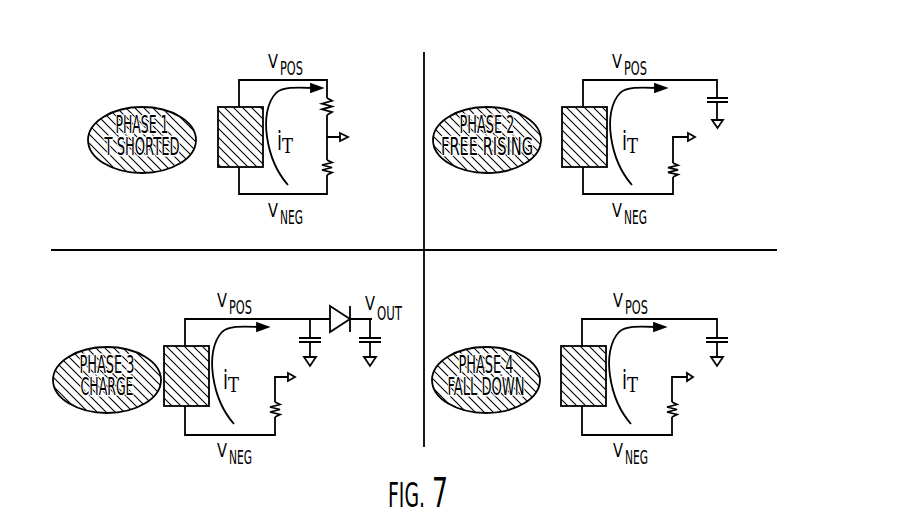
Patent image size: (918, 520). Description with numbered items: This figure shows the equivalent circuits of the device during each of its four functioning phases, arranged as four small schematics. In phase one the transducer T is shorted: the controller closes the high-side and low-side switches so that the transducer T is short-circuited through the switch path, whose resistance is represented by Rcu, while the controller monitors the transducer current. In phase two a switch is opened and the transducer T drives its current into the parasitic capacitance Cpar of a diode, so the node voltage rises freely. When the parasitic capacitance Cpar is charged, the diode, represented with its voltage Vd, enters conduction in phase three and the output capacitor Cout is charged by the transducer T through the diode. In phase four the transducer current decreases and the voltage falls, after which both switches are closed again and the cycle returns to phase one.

The transducer T is at (385, 256).
The copper coil resistance Rcu is at (491, 258).
The parasitic capacitance Cpar is at (533, 235).
The output capacitor Cout is at (385, 355).
The diode Vd is at (340, 303).